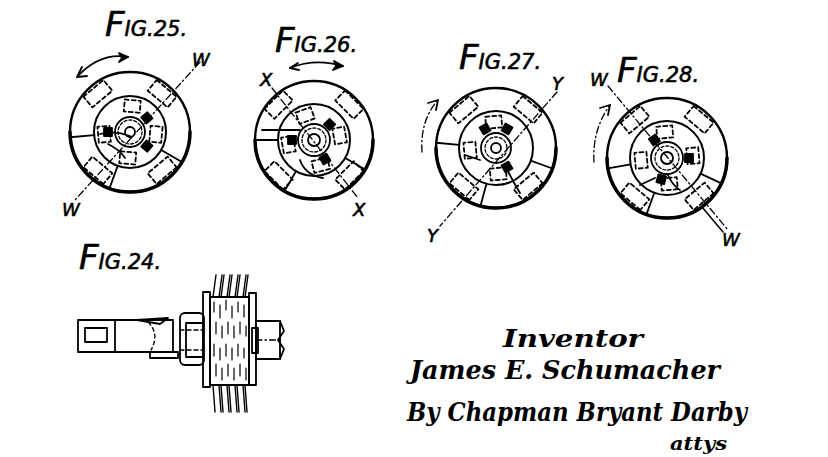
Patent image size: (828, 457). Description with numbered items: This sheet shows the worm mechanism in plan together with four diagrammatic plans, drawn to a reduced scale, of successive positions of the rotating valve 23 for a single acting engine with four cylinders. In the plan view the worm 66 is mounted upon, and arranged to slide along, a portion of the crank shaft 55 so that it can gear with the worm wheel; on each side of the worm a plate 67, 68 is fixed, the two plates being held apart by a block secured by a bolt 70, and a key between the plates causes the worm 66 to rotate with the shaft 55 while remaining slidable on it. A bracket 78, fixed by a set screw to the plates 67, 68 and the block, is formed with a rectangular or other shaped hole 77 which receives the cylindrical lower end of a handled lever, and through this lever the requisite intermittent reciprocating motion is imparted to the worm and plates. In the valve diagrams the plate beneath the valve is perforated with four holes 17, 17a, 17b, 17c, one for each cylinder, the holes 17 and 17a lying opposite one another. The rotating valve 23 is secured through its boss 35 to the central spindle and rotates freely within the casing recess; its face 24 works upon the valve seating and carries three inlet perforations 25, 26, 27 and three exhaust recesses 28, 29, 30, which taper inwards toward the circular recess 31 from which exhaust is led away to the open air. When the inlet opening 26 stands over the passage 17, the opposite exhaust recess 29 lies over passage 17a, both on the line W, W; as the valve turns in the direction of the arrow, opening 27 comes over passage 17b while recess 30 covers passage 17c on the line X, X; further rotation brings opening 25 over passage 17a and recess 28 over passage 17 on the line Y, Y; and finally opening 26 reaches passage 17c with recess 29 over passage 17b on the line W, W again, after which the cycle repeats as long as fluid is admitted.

In FIG. 25, the hole 17 is at (163, 97).
In FIG. 26, the hole 17 is at (345, 110).
In FIG. 27, the hole 17 is at (532, 112).
In FIG. 28, the hole 17 is at (702, 120).
In FIG. 25, the hole 17a is at (80, 163).
In FIG. 26, the hole 17a is at (295, 181).
In FIG. 27, the hole 17a is at (479, 187).
In FIG. 28, the hole 17a is at (640, 215).
In FIG. 25, the hole 17b is at (165, 182).
In FIG. 26, the hole 17b is at (368, 191).
In FIG. 27, the hole 17b is at (542, 192).
In FIG. 28, the hole 17b is at (703, 197).
In FIG. 25, the hole 17c is at (82, 92).
In FIG. 26, the hole 17c is at (287, 104).
In FIG. 27, the hole 17c is at (478, 112).
In FIG. 28, the hole 17c is at (643, 127).
In FIG. 25, the rotating valve 23 is at (160, 122).
In FIG. 26, the rotating valve 23 is at (343, 145).
In FIG. 27, the rotating valve 23 is at (535, 141).
In FIG. 28, the rotating valve 23 is at (705, 165).
In FIG. 25, the face of the rotating valve 24 is at (130, 156).
In FIG. 25, the perforation 25 is at (104, 124).
In FIG. 26, the perforation 25 is at (286, 149).
In FIG. 27, the perforation 25 is at (512, 178).
In FIG. 28, the perforation 25 is at (662, 205).
In FIG. 25, the perforation 26 is at (150, 114).
In FIG. 26, the perforation 26 is at (326, 110).
In FIG. 27, the perforation 26 is at (490, 122).
In FIG. 28, the perforation 26 is at (662, 137).
In FIG. 26, the perforation 27 is at (328, 190).
In FIG. 28, the perforation 27 is at (695, 154).
In FIG. 25, the recess 28 is at (162, 141).
In FIG. 26, the recess 28 is at (340, 135).
In FIG. 27, the recess 28 is at (503, 128).
In FIG. 28, the recess 28 is at (668, 128).
In FIG. 25, the recess 29 is at (108, 144).
In FIG. 26, the recess 29 is at (323, 178).
In FIG. 27, the recess 29 is at (520, 193).
In FIG. 28, the recess 29 is at (675, 183).
In FIG. 25, the recess 30 is at (126, 102).
In FIG. 26, the recess 30 is at (313, 116).
In FIG. 27, the recess 30 is at (472, 145).
In FIG. 28, the recess 30 is at (645, 156).
In FIG. 25, the circular recess 31 is at (100, 134).
In FIG. 26, the circular recess 31 is at (262, 130).
In FIG. 27, the circular recess 31 is at (465, 155).
In FIG. 28, the circular recess 31 is at (640, 185).
In FIG. 25, the boss 35 is at (160, 135).
In FIG. 26, the boss 35 is at (345, 160).
In FIG. 27, the boss 35 is at (533, 161).
In FIG. 28, the boss 35 is at (702, 168).
In FIG. 24, the crank shaft 55 is at (151, 318).
In FIG. 24, the worm 66 is at (228, 394).
In FIG. 24, the plate 67 is at (205, 381).
In FIG. 24, the plate 68 is at (254, 382).
In FIG. 24, the bolt 70 is at (182, 347).
In FIG. 24, the hole 77 is at (94, 338).
In FIG. 24, the bracket 78 is at (130, 328).